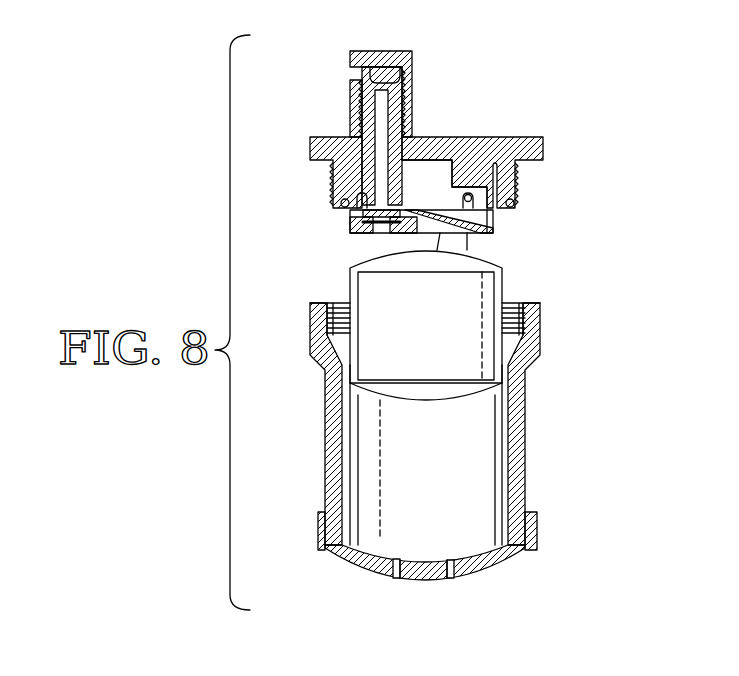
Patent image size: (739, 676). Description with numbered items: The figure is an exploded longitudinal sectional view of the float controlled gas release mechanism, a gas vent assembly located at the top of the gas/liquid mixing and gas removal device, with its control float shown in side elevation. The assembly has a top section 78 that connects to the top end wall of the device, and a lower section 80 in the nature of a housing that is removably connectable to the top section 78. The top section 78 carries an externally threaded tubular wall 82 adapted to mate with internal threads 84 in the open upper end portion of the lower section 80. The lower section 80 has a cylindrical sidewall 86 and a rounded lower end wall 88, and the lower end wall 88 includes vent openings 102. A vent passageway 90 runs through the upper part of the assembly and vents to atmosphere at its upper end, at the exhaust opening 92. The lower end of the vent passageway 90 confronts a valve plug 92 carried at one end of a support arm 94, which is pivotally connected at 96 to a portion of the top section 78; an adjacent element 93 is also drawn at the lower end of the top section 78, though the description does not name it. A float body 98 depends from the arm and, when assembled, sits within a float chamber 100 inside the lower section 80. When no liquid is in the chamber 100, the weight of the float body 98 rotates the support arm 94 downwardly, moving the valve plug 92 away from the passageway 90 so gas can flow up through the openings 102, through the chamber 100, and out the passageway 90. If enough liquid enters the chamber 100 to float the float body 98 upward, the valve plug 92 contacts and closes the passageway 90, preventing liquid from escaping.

The top section 78 is at (511, 137).
The lower section 80 is at (357, 573).
The externally threaded tubular wall 82 is at (517, 197).
The internal threads 84 is at (515, 302).
The cylindrical sidewall 86 is at (528, 418).
The rounded lower end wall 88 is at (438, 583).
The vent passageway 90 is at (380, 138).
The valve plug 92 is at (351, 72).
The valve seat assembly 93 is at (370, 234).
The support arm 94 is at (433, 188).
The pivot connection 96 is at (495, 222).
The float body 98 is at (410, 326).
The float chamber 100 is at (490, 478).
The vent openings 102 is at (402, 580).